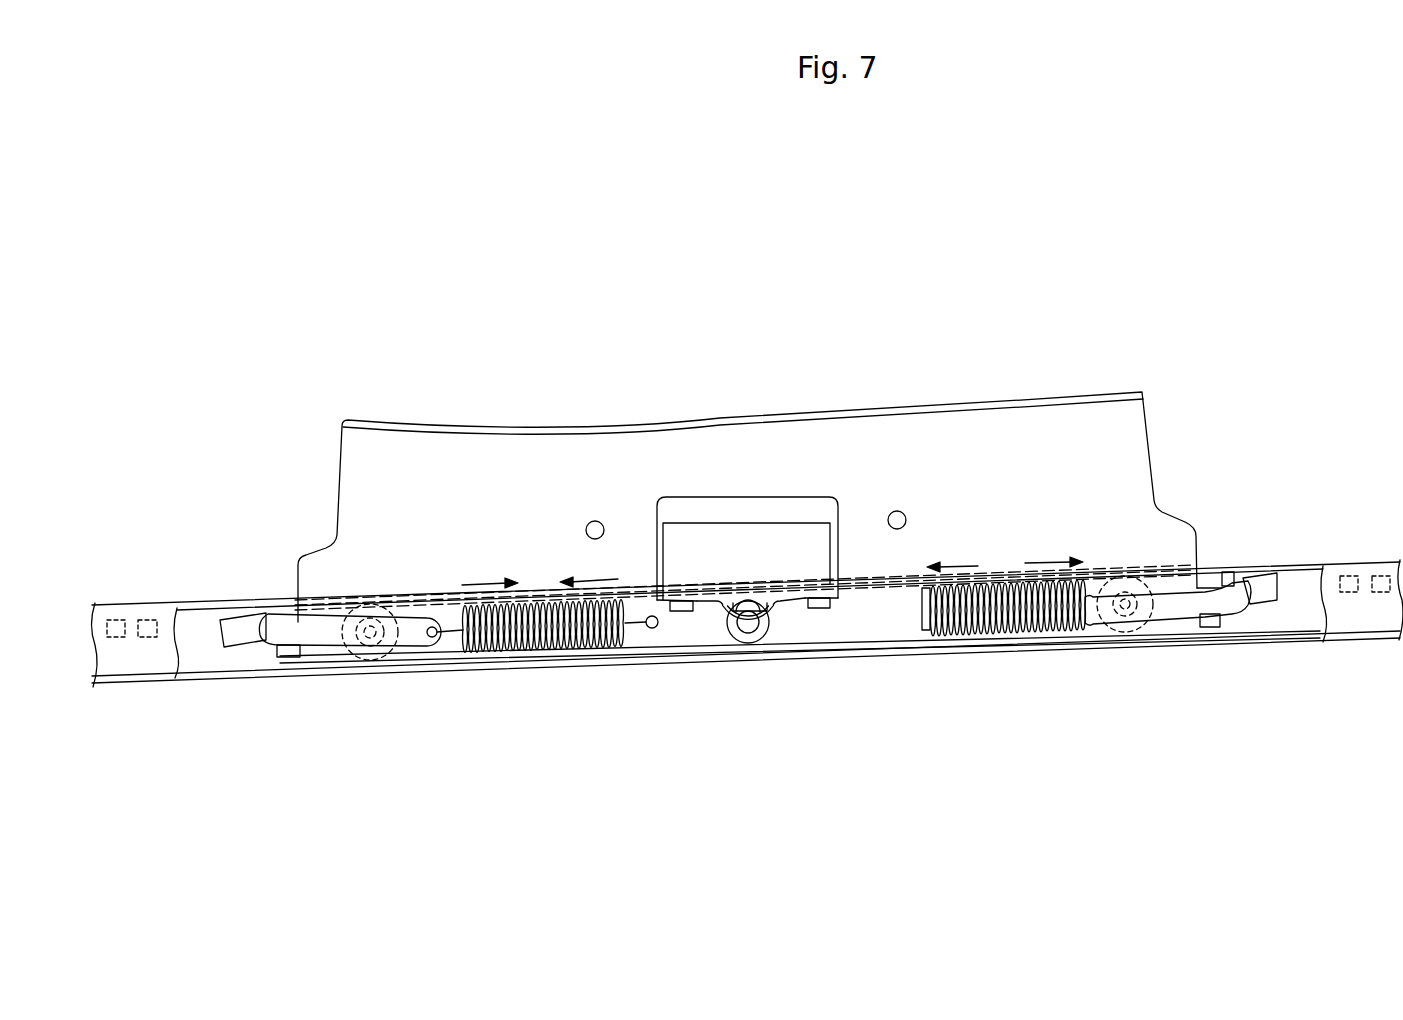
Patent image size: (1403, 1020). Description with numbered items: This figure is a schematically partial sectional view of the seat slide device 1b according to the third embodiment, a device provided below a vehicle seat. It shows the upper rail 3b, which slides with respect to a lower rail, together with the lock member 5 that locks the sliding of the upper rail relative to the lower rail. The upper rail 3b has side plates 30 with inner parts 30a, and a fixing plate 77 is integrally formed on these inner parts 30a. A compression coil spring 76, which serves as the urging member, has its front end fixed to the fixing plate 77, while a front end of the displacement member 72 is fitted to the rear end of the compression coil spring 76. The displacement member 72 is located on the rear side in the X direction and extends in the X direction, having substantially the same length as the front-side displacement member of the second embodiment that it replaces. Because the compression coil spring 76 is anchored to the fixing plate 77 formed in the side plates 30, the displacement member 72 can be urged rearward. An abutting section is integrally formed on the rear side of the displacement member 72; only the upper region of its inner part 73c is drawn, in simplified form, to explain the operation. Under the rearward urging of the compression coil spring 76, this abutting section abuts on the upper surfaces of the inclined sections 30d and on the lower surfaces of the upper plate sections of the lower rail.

The seat slide device 1b is at (1133, 283).
The upper rail 3b is at (1013, 390).
The side plates 30 is at (1138, 455).
The lock member 5 is at (668, 562).
The inner parts 30a is at (693, 632).
The fixing plate 77 is at (922, 610).
The compression coil spring 76 is at (1036, 628).
The displacement member 72 is at (1181, 618).
The inner part of abutting section 73c is at (1229, 582).
The inclined sections 30d is at (1267, 598).